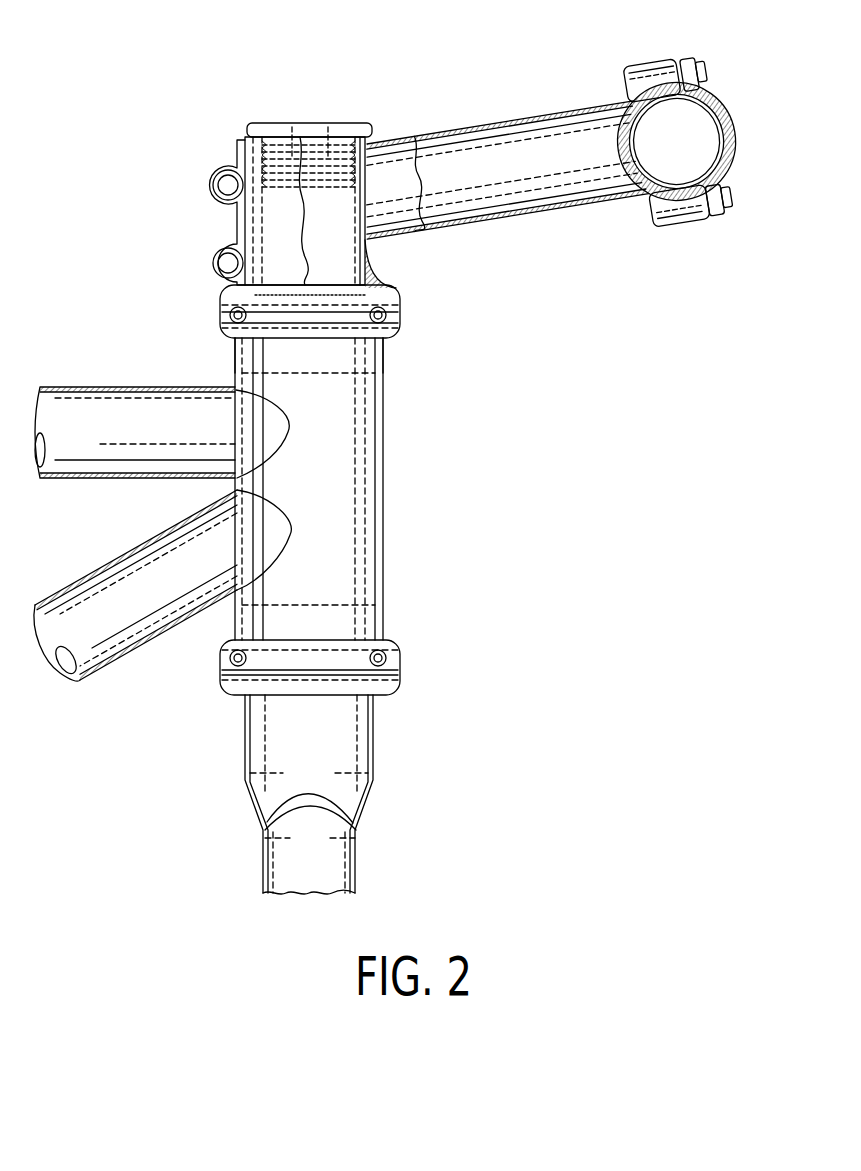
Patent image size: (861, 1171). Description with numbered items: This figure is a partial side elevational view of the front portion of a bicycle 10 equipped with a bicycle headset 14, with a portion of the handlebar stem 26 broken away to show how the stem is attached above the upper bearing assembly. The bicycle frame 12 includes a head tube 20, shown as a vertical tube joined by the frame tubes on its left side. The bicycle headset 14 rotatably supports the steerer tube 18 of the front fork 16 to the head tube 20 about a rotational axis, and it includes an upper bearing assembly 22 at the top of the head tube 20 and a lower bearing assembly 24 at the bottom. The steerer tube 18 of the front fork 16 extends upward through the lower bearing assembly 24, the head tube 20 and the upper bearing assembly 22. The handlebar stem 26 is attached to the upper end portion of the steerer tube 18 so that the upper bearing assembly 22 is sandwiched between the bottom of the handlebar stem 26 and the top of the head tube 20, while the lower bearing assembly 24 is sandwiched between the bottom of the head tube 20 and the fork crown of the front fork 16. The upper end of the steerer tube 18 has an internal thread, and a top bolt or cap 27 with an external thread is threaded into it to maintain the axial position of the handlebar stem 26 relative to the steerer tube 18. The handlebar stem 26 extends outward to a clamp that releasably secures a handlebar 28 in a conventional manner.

The bicycle 10 is at (170, 100).
The bicycle frame 12 is at (102, 383).
The bicycle headset 14 is at (528, 412).
The front fork 16 is at (360, 866).
The steerer tube 18 is at (235, 383).
The head tube 20 is at (288, 349).
The upper bearing assembly 22 is at (398, 327).
The lower bearing assembly 24 is at (398, 648).
The handlebar stem 26 is at (492, 122).
The cap 27 is at (280, 124).
The handlebar 28 is at (713, 94).